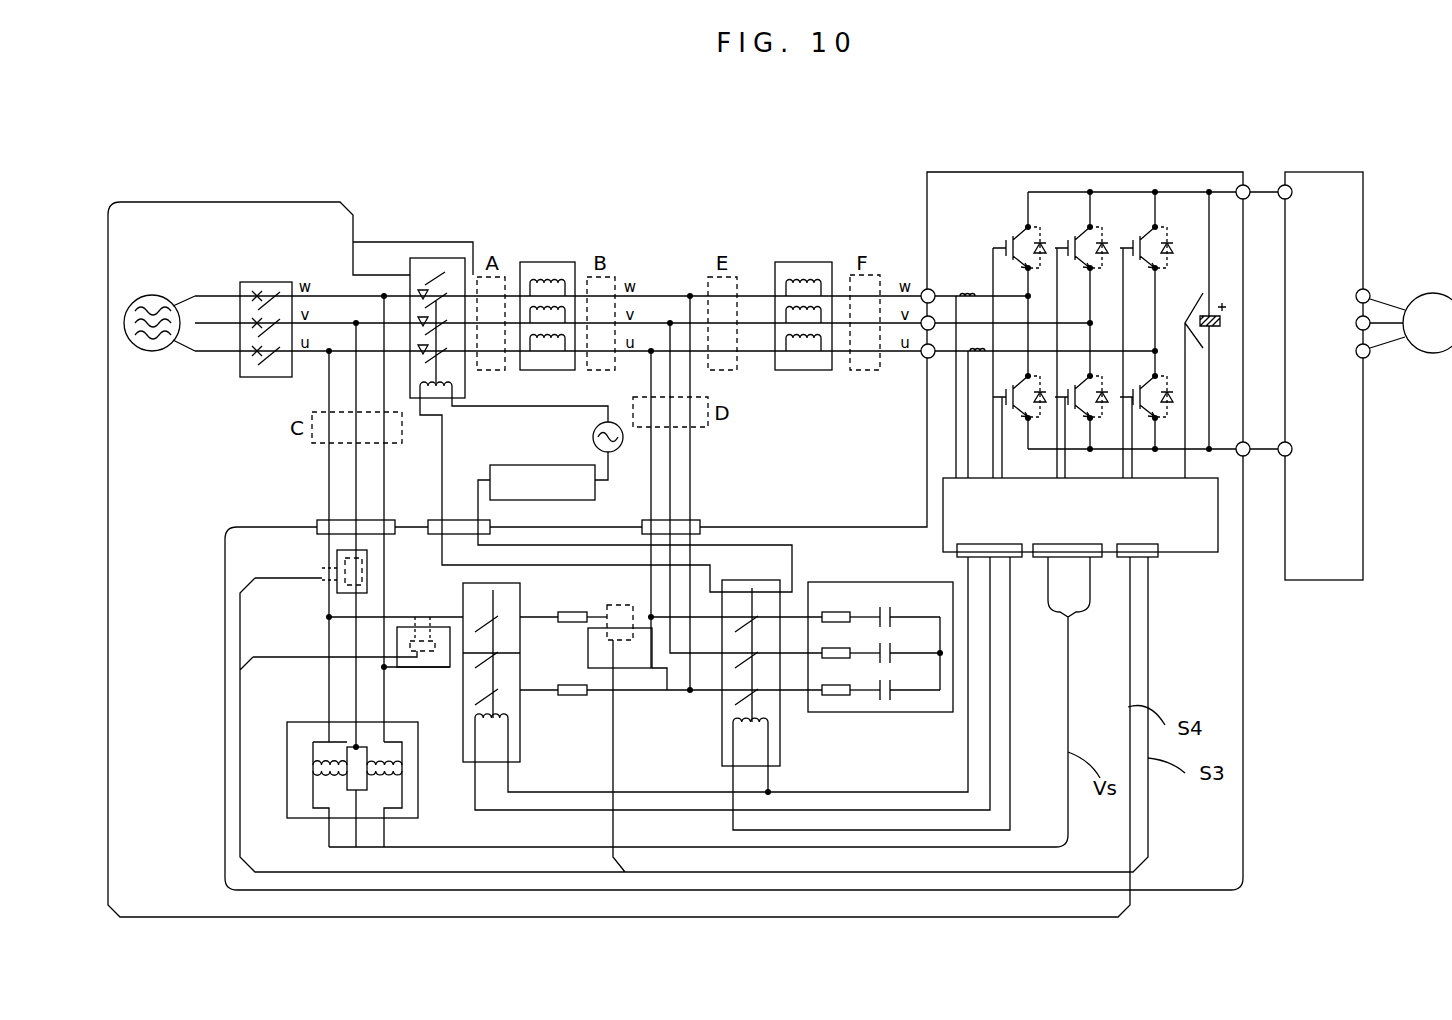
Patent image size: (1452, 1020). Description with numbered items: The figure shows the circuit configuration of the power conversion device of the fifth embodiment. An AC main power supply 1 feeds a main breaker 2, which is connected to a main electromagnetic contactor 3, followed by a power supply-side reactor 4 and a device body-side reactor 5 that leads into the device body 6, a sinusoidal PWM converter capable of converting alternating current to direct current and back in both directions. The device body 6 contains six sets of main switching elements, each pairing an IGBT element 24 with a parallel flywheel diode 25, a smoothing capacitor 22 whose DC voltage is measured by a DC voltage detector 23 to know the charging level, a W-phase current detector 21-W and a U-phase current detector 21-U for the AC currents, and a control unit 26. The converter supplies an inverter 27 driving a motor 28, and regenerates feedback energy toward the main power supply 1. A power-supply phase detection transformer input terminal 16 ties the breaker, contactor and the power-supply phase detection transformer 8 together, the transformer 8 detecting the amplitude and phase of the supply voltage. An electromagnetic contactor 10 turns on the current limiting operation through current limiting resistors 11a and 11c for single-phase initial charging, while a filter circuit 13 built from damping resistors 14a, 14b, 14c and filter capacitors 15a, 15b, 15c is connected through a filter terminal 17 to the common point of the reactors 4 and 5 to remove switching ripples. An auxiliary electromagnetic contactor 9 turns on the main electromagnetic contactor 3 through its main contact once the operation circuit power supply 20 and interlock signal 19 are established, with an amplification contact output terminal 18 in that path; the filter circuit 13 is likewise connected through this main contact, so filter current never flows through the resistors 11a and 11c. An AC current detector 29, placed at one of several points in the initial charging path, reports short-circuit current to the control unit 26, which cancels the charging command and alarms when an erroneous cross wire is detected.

The main power supply 1 is at (158, 295).
The main breaker 2 is at (270, 282).
The main electromagnetic contactor 3 is at (430, 258).
The power supply-side reactor 4 is at (548, 262).
The device body-side reactor 5 is at (805, 262).
The device body 6 is at (1245, 705).
The power-supply phase detection transformer 8 is at (300, 722).
The auxiliary electromagnetic contactor for turning on main electromagnetic contacto 9 is at (780, 740).
The electromagnetic contactor for turning on current limiting operation 10 is at (520, 722).
The current limiting resistor 11a is at (568, 612).
The current limiting resistor 11c is at (572, 686).
The filter circuit 13 is at (880, 676).
The damping resistor 14a is at (850, 604).
The damping resistor 14b is at (850, 642).
The damping resistor 14c is at (851, 678).
The filter capacitor 15a is at (910, 606).
The filter capacitor 15b is at (910, 644).
The filter capacitor 15c is at (910, 681).
The power-supply phase detection transformer input terminal 16 is at (322, 520).
The filter terminal 17 is at (693, 520).
The amplification contact output terminal for turning on main electromagnetic contac 18 is at (435, 520).
The interlock signal 19 is at (500, 465).
The operation circuit power supply 20 is at (593, 437).
The W-phase current detector 21-W is at (962, 294).
The U-phase current detector 21-U is at (975, 355).
The smoothing capacitor 22 is at (1222, 322).
The DC voltage detector 23 is at (1186, 320).
The IGBT element 24 is at (1010, 240).
The flywheel diode 25 is at (1042, 236).
The control unit 26 is at (1190, 553).
The inverter 27 is at (1320, 582).
The motor 28 is at (1437, 355).
The AC current detector 29 is at (320, 590).